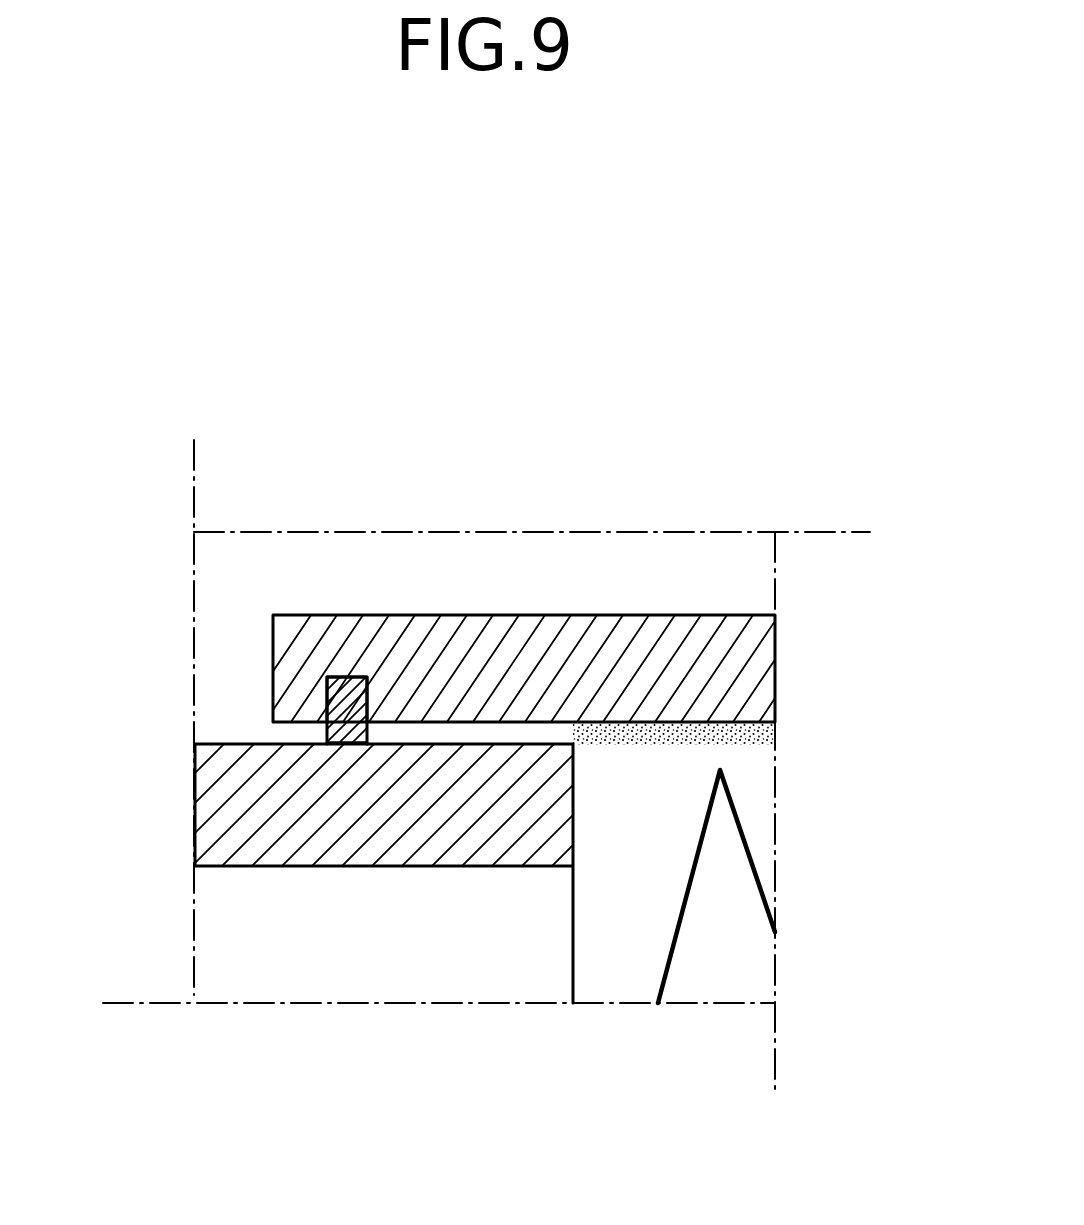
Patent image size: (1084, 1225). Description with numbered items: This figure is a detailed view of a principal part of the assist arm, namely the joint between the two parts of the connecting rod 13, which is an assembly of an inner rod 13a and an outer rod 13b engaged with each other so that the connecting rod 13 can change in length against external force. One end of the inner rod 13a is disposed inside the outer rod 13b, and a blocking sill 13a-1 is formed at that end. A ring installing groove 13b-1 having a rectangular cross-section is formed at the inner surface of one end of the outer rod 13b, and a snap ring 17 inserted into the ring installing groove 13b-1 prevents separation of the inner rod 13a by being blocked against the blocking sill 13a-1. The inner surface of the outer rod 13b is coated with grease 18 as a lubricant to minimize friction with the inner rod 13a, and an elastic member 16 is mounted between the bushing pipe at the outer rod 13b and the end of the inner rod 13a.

The connecting rod 13 is at (235, 368).
The inner rod 13a is at (243, 758).
The outer rod 13b is at (293, 617).
The blocking sill 13a-1 is at (345, 747).
The ring installing groove 13b-1 is at (372, 672).
The snap ring 17 is at (340, 677).
The grease 18 is at (705, 742).
The elastic member 16 is at (753, 848).